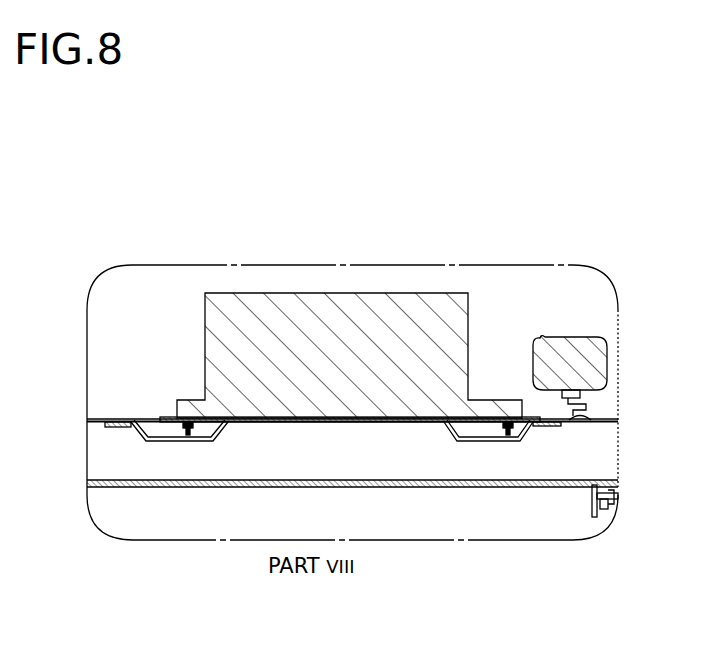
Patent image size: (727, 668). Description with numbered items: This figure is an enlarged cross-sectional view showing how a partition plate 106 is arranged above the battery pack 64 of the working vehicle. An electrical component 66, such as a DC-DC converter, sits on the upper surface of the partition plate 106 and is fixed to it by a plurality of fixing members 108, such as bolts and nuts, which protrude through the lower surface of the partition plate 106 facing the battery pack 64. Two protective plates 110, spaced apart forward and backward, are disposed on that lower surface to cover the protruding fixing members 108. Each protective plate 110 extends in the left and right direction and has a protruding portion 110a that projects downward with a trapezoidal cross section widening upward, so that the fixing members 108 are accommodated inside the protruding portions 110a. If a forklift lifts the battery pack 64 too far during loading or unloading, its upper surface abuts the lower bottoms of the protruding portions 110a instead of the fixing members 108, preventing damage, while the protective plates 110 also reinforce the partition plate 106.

The battery pack 64 is at (545, 497).
The electrical component 66 is at (492, 320).
The partition plate 106 is at (123, 420).
The fixing members 108 is at (188, 435).
The protective plates 110 is at (142, 441).
The protruding portion 110a is at (173, 448).